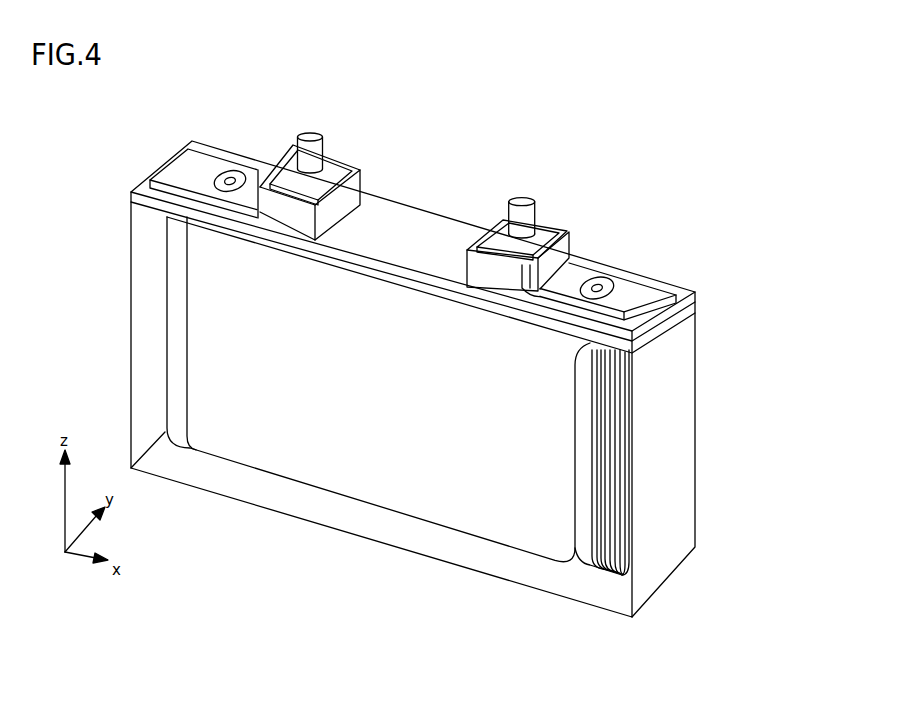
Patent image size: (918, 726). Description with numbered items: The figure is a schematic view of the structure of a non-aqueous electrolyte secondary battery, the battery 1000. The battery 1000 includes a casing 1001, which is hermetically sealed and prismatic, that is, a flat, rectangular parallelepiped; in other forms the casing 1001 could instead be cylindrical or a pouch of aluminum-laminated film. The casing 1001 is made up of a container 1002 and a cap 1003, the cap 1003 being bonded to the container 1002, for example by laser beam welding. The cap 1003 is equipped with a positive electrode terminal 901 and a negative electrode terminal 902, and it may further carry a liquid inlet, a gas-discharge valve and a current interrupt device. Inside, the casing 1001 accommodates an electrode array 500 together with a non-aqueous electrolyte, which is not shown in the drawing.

The battery 1000 is at (470, 128).
The casing 1001 is at (765, 257).
The container 1002 is at (692, 342).
The cap 1003 is at (690, 296).
The positive electrode terminal 901 is at (523, 198).
The negative electrode terminal 902 is at (311, 135).
The electrode array 500 is at (360, 405).